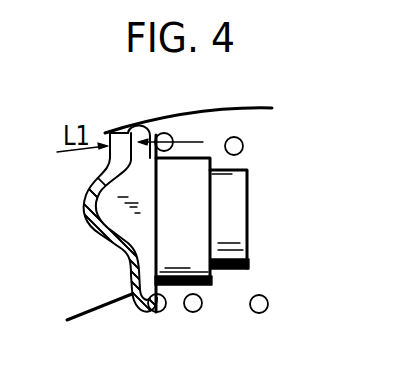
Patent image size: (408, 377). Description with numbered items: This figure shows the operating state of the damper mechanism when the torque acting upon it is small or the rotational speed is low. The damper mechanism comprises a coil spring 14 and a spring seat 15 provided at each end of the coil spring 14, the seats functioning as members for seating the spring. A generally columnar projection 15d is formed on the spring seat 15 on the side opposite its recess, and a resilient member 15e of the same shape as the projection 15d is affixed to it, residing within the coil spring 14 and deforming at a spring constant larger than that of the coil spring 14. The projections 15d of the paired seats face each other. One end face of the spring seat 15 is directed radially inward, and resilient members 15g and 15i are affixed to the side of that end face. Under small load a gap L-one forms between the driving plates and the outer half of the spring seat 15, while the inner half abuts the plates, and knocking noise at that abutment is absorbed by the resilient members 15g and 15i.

The coil spring 14 is at (198, 310).
The spring seat 15 is at (85, 193).
The projection 15d is at (200, 218).
The resilient member 15e is at (237, 200).
The resilient member 15g is at (83, 228).
The resilient member 15i is at (137, 293).